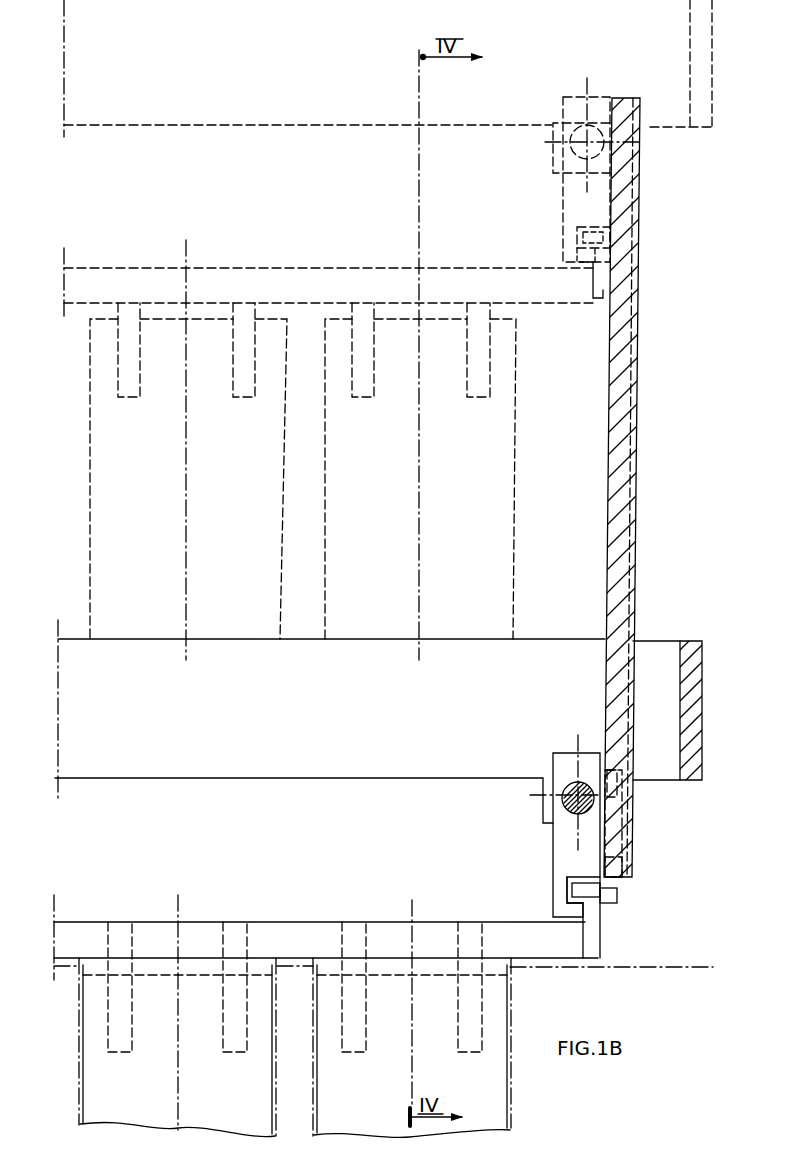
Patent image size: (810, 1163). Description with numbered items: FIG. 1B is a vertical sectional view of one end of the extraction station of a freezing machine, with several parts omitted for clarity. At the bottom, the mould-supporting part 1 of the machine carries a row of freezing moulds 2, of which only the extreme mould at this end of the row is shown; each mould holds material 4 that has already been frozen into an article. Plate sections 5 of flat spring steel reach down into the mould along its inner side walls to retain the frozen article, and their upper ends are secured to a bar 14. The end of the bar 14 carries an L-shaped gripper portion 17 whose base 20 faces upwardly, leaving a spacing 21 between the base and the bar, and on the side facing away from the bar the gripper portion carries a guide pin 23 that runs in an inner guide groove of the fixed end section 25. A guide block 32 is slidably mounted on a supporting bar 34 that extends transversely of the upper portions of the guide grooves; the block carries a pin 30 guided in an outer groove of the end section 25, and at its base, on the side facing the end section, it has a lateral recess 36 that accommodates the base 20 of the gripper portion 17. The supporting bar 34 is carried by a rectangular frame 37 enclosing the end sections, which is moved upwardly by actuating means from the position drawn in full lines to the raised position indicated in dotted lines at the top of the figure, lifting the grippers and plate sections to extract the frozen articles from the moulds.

The freezing mould-supporting part 1 is at (637, 965).
The freezing mould 2 is at (97, 1113).
The frozen material 4 is at (115, 529).
The plate section 5 is at (127, 390).
The bar 14 is at (296, 280).
The gripper portion 17 is at (603, 298).
The base 20 is at (592, 236).
The spacing 21 is at (592, 258).
The guide pin 23 is at (617, 897).
The end section 25 is at (622, 418).
The pin 30 is at (612, 858).
The guide block 32 is at (578, 118).
The supporting bar 34 is at (575, 136).
The lateral recess 36 is at (560, 893).
The rectangular frame 37 is at (212, 113).